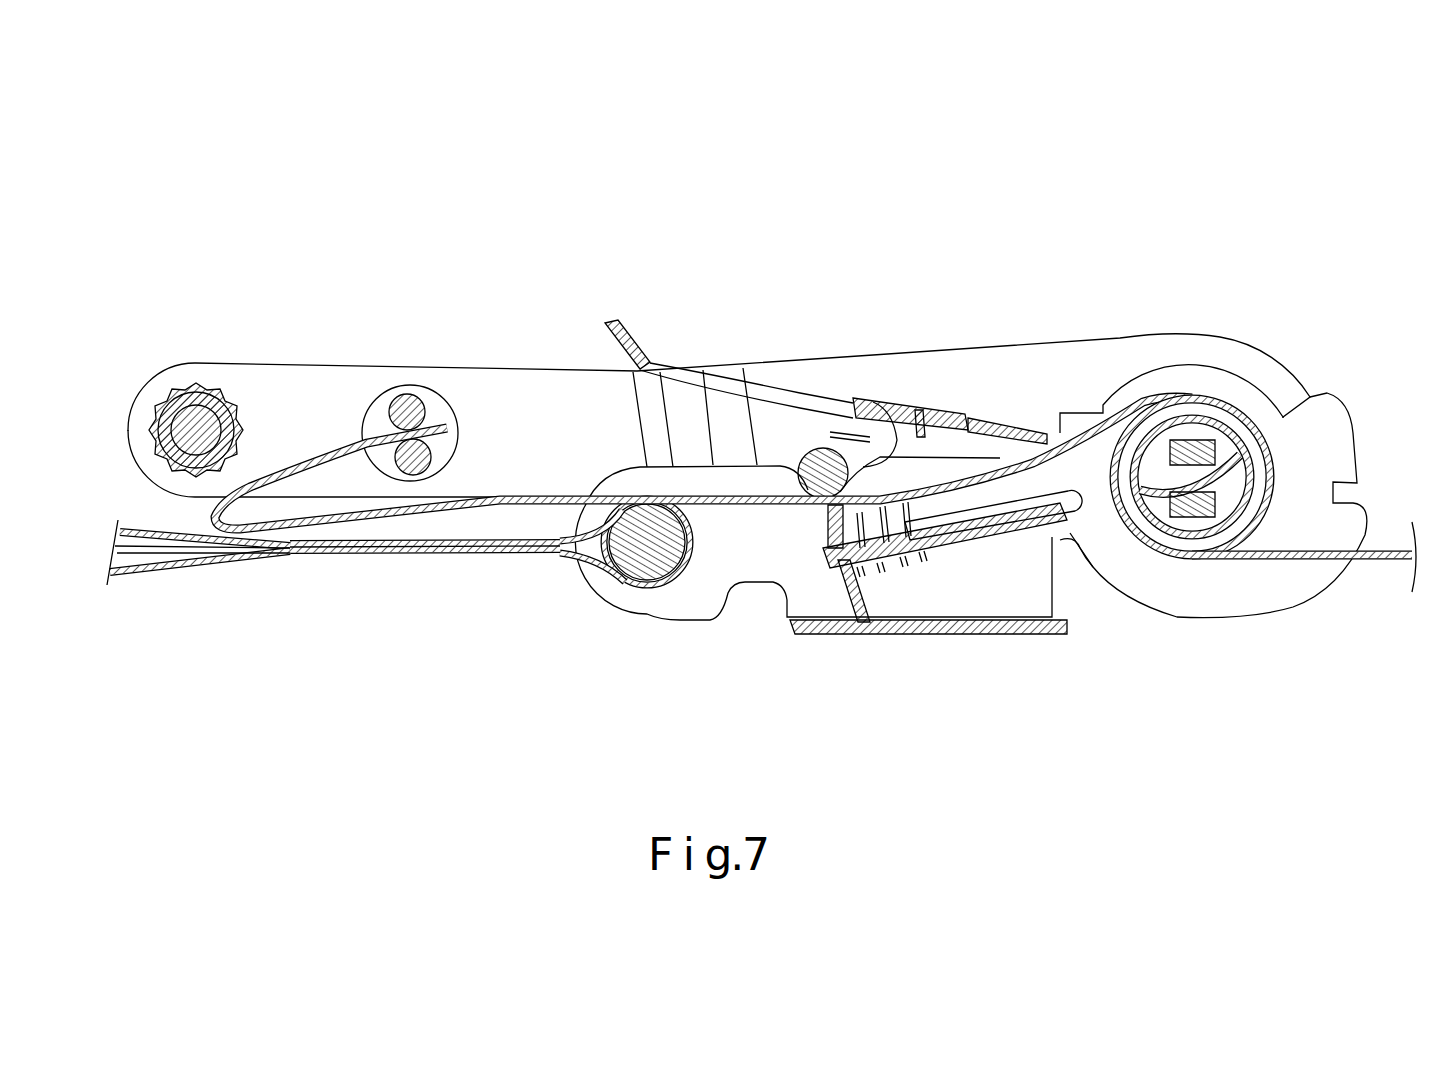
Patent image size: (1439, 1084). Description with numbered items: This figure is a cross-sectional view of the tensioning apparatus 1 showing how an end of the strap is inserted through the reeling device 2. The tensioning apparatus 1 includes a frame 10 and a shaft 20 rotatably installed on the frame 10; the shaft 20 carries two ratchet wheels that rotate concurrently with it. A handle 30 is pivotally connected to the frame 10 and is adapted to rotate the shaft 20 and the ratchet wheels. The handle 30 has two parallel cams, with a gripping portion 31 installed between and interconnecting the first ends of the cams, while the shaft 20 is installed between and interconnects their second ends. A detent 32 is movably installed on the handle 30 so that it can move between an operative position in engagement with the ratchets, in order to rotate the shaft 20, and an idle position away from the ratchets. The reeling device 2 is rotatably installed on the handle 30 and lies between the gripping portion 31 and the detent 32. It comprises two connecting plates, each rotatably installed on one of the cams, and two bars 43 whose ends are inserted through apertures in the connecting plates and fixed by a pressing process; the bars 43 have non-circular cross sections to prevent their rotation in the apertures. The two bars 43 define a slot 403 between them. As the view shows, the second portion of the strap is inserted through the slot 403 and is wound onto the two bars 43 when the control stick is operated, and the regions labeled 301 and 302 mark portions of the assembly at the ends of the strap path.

The tensioning apparatus 1 is at (965, 675).
The reeling device 2 is at (400, 252).
The frame 10 is at (808, 605).
The shaft 20 is at (1210, 565).
The handle 30 is at (290, 508).
The gripping portion 31 is at (190, 415).
The detent 32 is at (700, 378).
The bar 43 is at (395, 398).
The first end of strap 301 is at (218, 332).
The second end of strap 302 is at (1225, 327).
The slot 403 is at (415, 390).